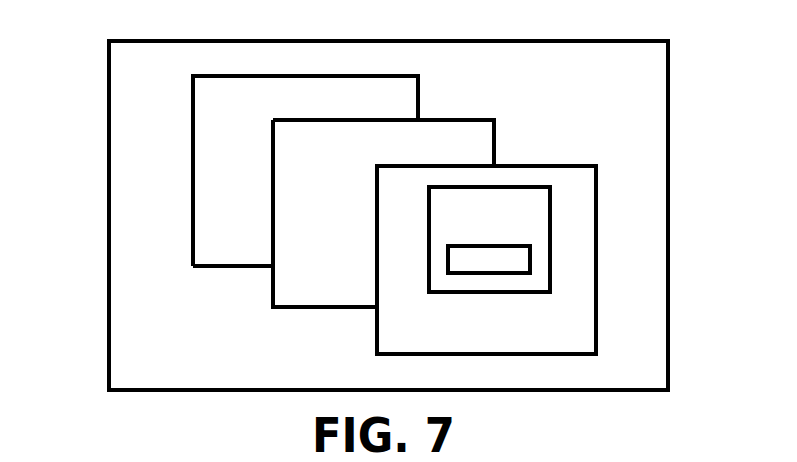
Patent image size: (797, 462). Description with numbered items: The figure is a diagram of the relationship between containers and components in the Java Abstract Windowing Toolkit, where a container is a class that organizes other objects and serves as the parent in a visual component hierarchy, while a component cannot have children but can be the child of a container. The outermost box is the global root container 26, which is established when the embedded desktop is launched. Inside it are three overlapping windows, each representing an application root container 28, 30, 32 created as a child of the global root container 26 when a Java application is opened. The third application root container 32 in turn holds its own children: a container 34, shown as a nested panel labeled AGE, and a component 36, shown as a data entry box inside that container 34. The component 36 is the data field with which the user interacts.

The global root container 26 is at (122, 103).
The application root container 28 is at (212, 188).
The application root container 30 is at (296, 280).
The application root container 32 is at (576, 182).
The container 34 is at (528, 232).
The component 36 is at (512, 262).